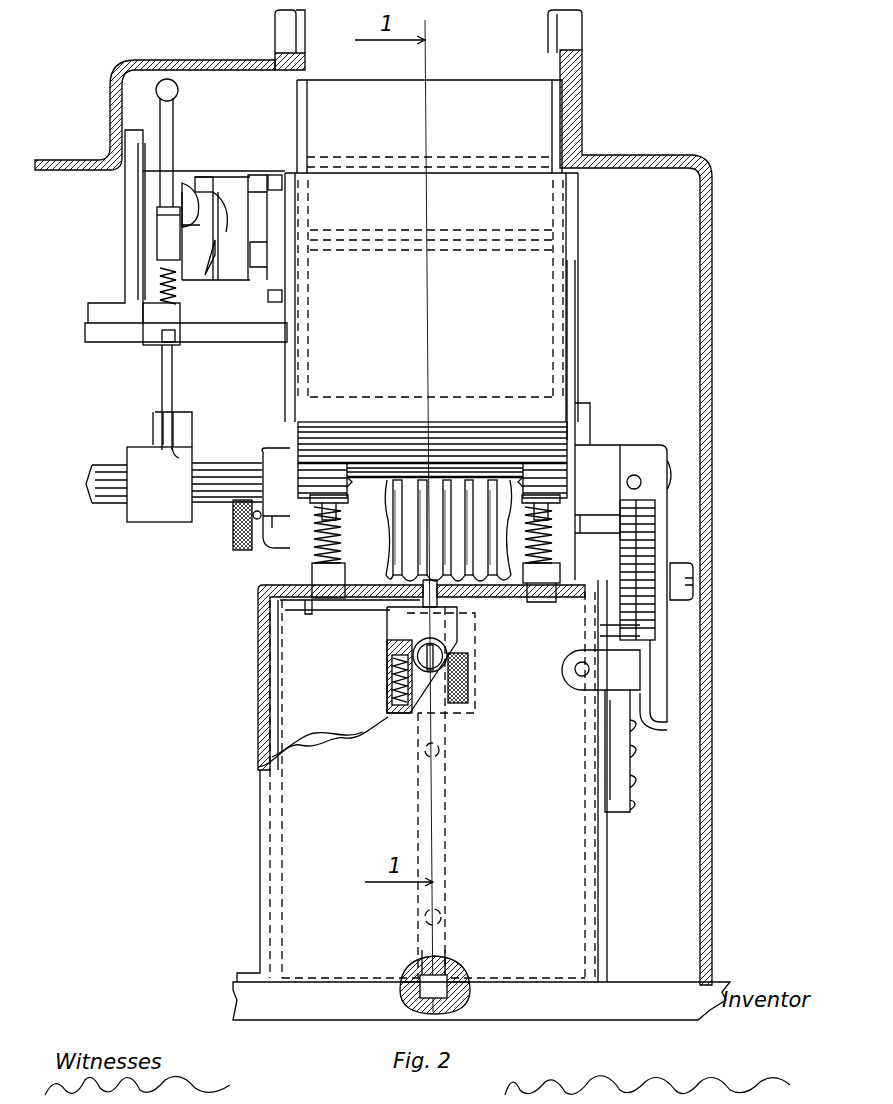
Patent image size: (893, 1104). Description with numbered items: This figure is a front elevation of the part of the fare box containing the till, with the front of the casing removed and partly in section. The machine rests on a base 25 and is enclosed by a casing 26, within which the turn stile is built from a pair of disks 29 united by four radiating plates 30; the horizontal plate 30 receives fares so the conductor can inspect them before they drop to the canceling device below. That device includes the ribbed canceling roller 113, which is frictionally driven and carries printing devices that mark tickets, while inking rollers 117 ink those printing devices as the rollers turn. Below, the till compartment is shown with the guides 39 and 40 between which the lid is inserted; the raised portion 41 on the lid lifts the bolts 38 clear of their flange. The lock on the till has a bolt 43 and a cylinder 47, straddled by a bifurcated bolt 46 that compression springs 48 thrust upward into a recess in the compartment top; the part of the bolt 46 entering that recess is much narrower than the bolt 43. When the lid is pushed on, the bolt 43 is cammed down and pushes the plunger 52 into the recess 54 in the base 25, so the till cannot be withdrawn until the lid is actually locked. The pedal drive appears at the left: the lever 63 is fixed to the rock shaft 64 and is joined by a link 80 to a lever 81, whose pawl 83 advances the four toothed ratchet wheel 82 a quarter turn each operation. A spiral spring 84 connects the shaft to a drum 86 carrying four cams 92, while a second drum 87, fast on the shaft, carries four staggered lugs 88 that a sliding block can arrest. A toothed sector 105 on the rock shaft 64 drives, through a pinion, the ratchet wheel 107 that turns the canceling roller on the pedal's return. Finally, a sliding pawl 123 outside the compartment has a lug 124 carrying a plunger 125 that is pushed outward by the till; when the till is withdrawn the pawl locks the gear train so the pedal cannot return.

The base 25 is at (515, 1013).
The casing 26 is at (700, 885).
The disks 29 is at (300, 108).
The radiating plates 30 is at (464, 95).
The bolts 38 is at (338, 580).
The guide 39 is at (432, 785).
The guide 40 is at (283, 597).
The raised portion 41 is at (309, 612).
The bolt 43 is at (462, 618).
The bolt 46 is at (398, 627).
The cylinder 47 is at (442, 657).
The compression springs 48 is at (390, 698).
The plunger 52 is at (443, 778).
The recess 54 is at (470, 993).
The lever 63 is at (186, 420).
The rock shaft 64 is at (104, 478).
The link 80 is at (168, 385).
The lever 81 is at (132, 340).
The ratchet wheel 82 is at (168, 238).
The pawl 83 is at (158, 272).
The spiral spring 84 is at (228, 205).
The drum 86 is at (190, 292).
The drum 87 is at (256, 212).
The lugs 88 is at (272, 175).
The cams 92 is at (193, 216).
The toothed sector 105 is at (666, 558).
The ratchet wheel 107 is at (652, 641).
The canceling roller 113 is at (410, 524).
The inking rollers 117 is at (382, 445).
The sliding pawl 123 is at (652, 718).
The lug 124 is at (577, 667).
The plunger 125 is at (577, 677).